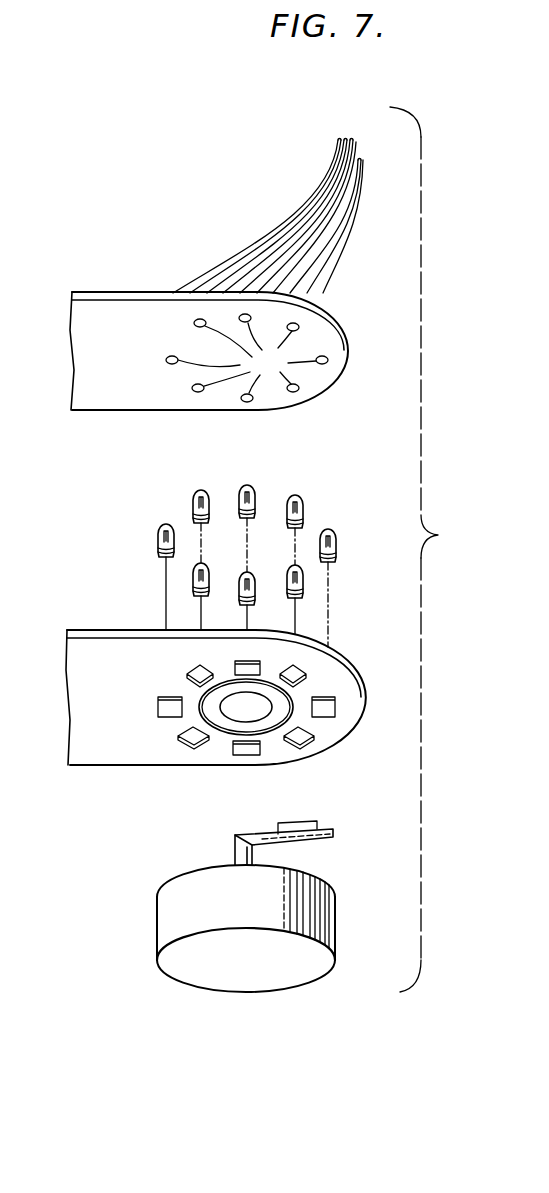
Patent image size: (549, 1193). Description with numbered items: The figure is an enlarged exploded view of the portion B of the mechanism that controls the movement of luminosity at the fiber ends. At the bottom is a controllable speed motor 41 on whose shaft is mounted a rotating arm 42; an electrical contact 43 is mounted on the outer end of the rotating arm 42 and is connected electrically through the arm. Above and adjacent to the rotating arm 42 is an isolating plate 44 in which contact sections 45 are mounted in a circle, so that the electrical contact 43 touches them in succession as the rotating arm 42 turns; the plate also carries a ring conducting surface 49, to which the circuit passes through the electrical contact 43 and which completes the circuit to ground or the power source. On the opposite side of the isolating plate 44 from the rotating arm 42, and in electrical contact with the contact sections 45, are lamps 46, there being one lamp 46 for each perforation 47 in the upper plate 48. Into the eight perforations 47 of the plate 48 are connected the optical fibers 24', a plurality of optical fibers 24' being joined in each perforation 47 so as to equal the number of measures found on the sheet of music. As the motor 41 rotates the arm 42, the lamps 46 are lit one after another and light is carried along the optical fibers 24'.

The optical fibers 24' is at (286, 216).
The controllable speed motor 41 is at (335, 930).
The rotating arm 42 is at (275, 832).
The electrical contact 43 is at (318, 826).
The isolating plate 44 is at (337, 654).
The contact sections 45 is at (160, 702).
The lamps 46 is at (330, 528).
The perforations 47 is at (247, 358).
The plate 48 is at (350, 345).
The ring conducting surface 49 is at (200, 710).
The portion shown by the bracket B is at (425, 549).